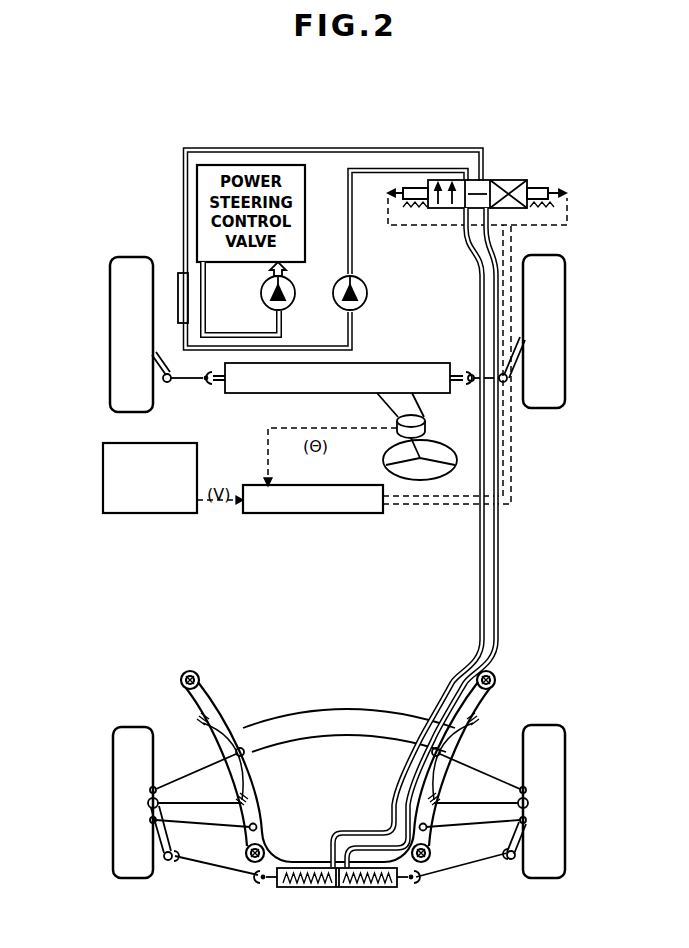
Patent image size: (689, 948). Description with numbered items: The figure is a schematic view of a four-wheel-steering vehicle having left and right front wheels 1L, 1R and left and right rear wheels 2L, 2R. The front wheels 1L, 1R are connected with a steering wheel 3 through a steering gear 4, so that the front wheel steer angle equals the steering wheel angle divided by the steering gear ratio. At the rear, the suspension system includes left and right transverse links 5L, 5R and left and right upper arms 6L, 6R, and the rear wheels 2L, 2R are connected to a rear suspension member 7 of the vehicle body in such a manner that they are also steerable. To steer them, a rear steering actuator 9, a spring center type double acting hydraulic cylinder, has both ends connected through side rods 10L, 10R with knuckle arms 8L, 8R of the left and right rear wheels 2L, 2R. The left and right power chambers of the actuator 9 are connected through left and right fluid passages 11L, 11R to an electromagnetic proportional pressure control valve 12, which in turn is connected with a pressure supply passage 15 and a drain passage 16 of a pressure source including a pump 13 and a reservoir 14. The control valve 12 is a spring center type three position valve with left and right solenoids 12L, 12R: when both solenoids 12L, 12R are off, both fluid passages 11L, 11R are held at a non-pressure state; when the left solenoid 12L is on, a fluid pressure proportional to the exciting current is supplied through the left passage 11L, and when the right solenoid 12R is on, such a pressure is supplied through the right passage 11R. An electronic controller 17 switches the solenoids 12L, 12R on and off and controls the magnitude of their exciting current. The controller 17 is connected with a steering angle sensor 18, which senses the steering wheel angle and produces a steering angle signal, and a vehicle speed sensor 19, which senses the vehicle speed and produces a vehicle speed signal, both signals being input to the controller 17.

The left front wheel 1L is at (110, 272).
The right front wheel 1R is at (565, 270).
The left rear wheel 2L is at (112, 866).
The right rear wheel 2R is at (566, 867).
The steering wheel 3 is at (445, 478).
The steering gear 4 is at (389, 363).
The left transverse link 5L is at (192, 750).
The right transverse link 5R is at (477, 741).
The left upper arm 6L is at (252, 822).
The right upper arm 6R is at (482, 822).
The rear suspension member 7 is at (330, 710).
The left knuckle arm 8L is at (170, 838).
The right knuckle arm 8R is at (506, 839).
The rear steering actuator 9 is at (345, 889).
The left side rod 10L is at (213, 873).
The right side rod 10R is at (463, 873).
The left fluid passage 11L is at (479, 576).
The right fluid passage 11R is at (499, 576).
The electromagnetic proportional pressure control valve 12 is at (514, 165).
The left solenoid 12L is at (406, 190).
The right solenoid 12R is at (541, 183).
The pump 13 is at (368, 294).
The reservoir 14 is at (171, 290).
The pressure supply passage 15 is at (356, 168).
The drain passage 16 is at (326, 148).
The electronic controller 17 is at (314, 486).
The steering angle sensor 18 is at (426, 431).
The vehicle speed sensor 19 is at (174, 443).